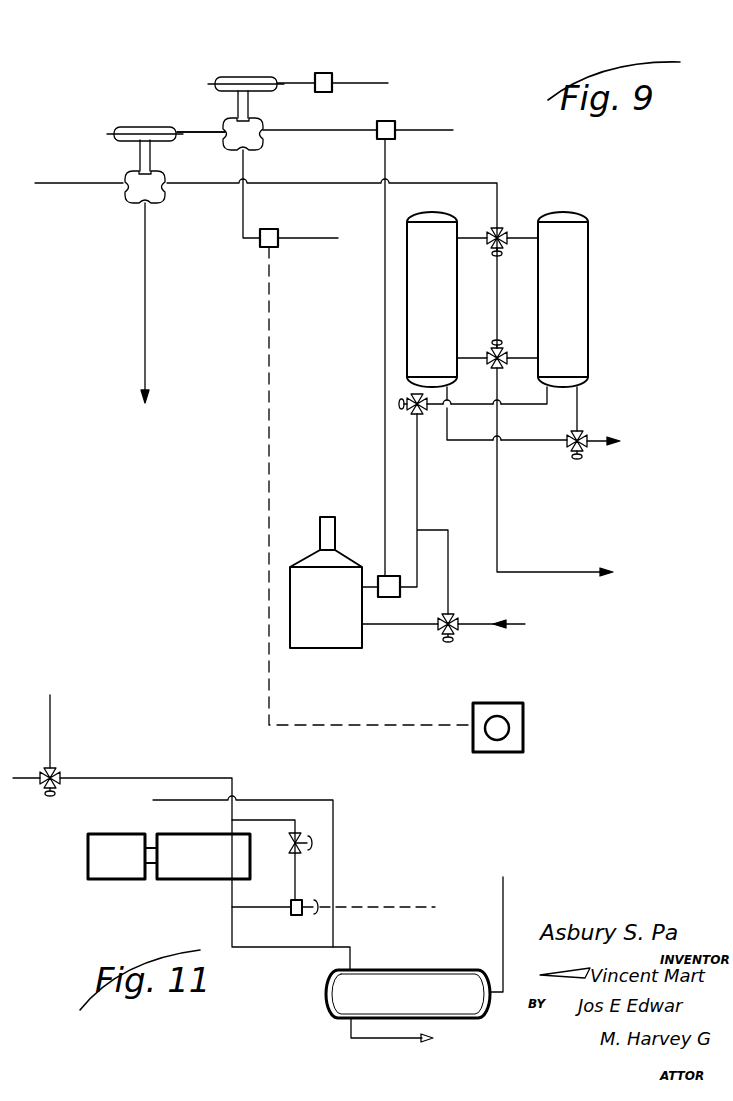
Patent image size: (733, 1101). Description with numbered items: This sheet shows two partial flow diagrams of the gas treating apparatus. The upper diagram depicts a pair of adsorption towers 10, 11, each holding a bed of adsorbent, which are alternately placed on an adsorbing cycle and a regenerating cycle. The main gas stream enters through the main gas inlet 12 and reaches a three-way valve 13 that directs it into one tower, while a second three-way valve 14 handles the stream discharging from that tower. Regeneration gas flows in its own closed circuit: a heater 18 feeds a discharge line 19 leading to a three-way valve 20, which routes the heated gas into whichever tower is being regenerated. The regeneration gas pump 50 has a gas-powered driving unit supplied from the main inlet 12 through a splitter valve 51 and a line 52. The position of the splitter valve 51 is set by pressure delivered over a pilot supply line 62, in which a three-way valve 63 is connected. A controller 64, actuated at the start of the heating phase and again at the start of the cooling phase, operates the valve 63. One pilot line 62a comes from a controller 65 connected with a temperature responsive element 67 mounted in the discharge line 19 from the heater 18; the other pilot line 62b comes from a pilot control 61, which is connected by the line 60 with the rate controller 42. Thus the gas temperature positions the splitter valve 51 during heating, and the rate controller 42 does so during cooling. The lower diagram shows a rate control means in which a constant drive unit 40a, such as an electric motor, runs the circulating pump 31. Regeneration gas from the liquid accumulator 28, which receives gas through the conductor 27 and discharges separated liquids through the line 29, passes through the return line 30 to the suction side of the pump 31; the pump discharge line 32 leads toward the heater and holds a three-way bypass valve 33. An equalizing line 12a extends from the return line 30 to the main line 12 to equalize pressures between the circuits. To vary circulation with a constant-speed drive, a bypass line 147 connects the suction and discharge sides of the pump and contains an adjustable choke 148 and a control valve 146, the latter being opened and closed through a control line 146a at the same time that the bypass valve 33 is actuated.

In FIG. 9, the adsorption tower 10 is at (457, 276).
In FIG. 9, the adsorption tower 11 is at (580, 268).
In FIG. 9, the main gas stream inlet 12 is at (82, 183).
In FIG. 9, the three-way valve 13 is at (501, 230).
In FIG. 9, the three-way valve 14 is at (497, 343).
In FIG. 9, the heater 18 is at (310, 640).
In FIG. 9, the discharge line 19 is at (419, 476).
In FIG. 9, the three-way valve 20 is at (399, 404).
In FIG. 9, the rate controller instrument 42 is at (508, 703).
In FIG. 9, the pump 50 is at (118, 422).
In FIG. 9, the splitter valve 51 is at (137, 197).
In FIG. 9, the line 52 is at (145, 297).
In FIG. 9, the line 60 is at (404, 723).
In FIG. 9, the pilot control 61 is at (272, 228).
In FIG. 9, the pilot supply line 62 is at (193, 130).
In FIG. 9, the pilot line 62a is at (336, 130).
In FIG. 9, the pilot line 62b is at (243, 210).
In FIG. 9, the three-way valve 63 is at (250, 122).
In FIG. 9, the controller 64 is at (325, 72).
In FIG. 9, the controller 65 is at (392, 120).
In FIG. 9, the temperature responsive element 67 is at (385, 576).
In FIG. 11, the equalizing line 12a is at (300, 800).
In FIG. 11, the conductor 27 is at (503, 892).
In FIG. 11, the liquid accumulator 28 is at (397, 970).
In FIG. 11, the line 29 is at (388, 1045).
In FIG. 11, the return line 30 is at (312, 949).
In FIG. 11, the circulating pump 31 is at (190, 834).
In FIG. 11, the discharge line 32 is at (165, 778).
In FIG. 11, the three-way valve 33 is at (56, 768).
In FIG. 11, the constant drive unit 40a is at (108, 834).
In FIG. 11, the control valve 146 is at (292, 903).
In FIG. 11, the control line 146a is at (377, 904).
In FIG. 11, the bypass line 147 is at (252, 820).
In FIG. 11, the adjustable choke 148 is at (312, 842).